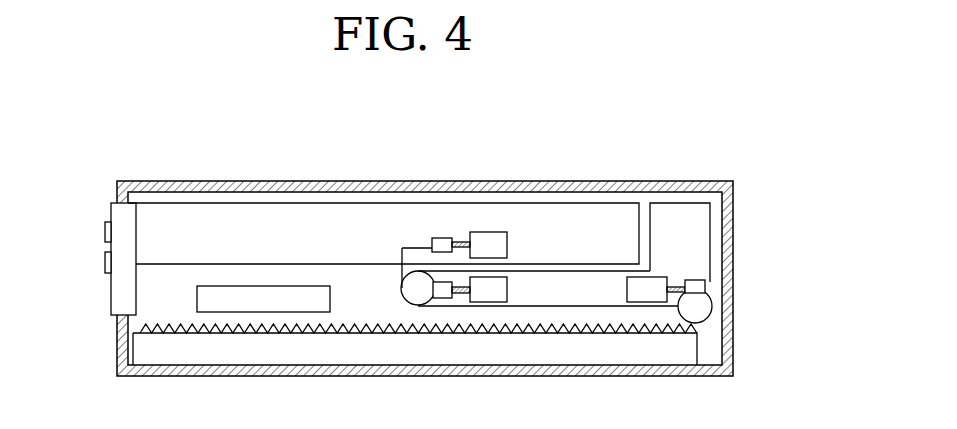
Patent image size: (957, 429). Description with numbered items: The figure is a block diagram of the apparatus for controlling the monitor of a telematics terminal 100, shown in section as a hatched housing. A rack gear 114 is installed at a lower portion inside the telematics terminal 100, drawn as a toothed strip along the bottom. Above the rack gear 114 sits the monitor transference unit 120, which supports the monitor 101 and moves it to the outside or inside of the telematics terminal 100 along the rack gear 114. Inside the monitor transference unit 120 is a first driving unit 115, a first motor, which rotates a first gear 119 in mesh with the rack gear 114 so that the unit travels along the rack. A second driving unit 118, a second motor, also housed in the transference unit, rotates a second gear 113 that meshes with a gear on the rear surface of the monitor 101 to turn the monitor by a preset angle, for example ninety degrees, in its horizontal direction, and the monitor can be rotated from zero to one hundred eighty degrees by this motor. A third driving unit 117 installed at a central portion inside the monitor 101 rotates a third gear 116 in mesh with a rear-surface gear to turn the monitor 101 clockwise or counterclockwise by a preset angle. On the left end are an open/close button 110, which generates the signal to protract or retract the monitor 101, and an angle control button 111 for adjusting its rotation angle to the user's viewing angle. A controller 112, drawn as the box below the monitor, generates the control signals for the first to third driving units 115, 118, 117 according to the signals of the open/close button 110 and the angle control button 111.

The telematics terminal 100 is at (641, 181).
The monitor 101 is at (203, 232).
The open/close button 110 is at (104, 233).
The angle control button 111 is at (104, 265).
The controller 112 is at (272, 297).
The second gear 113 is at (442, 290).
The rack gear 114 is at (538, 333).
The first driving unit 115 is at (646, 288).
The third gear 116 is at (443, 245).
The third driving unit 117 is at (491, 243).
The second driving unit 118 is at (489, 288).
The first gear 119 is at (695, 283).
The monitor transference unit 120 is at (687, 235).